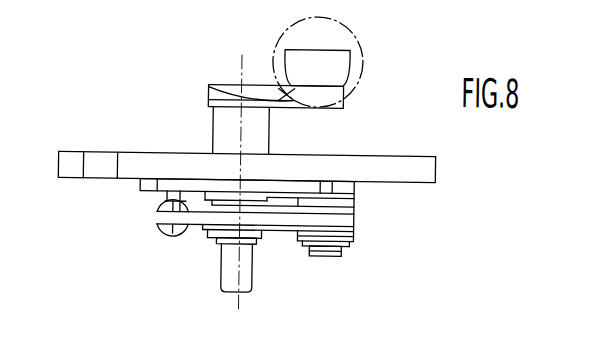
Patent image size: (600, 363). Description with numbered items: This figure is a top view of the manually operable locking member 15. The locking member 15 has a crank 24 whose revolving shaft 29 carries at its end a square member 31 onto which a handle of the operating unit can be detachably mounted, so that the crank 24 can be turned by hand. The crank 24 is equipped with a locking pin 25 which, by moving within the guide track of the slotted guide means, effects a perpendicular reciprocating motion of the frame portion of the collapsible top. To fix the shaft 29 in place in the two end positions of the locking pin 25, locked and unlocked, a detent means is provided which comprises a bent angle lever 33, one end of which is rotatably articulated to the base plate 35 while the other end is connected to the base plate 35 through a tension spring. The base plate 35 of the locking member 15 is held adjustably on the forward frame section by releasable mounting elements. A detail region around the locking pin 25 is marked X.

The clamping device 15 is at (246, 230).
The top plate 24 is at (278, 96).
The cup-shaped receiving element 25 is at (295, 52).
The stem 29 is at (230, 132).
The bolt 31 is at (266, 275).
The roller 33 is at (203, 222).
The support bar 35 is at (413, 169).
The detail circle X is at (358, 41).